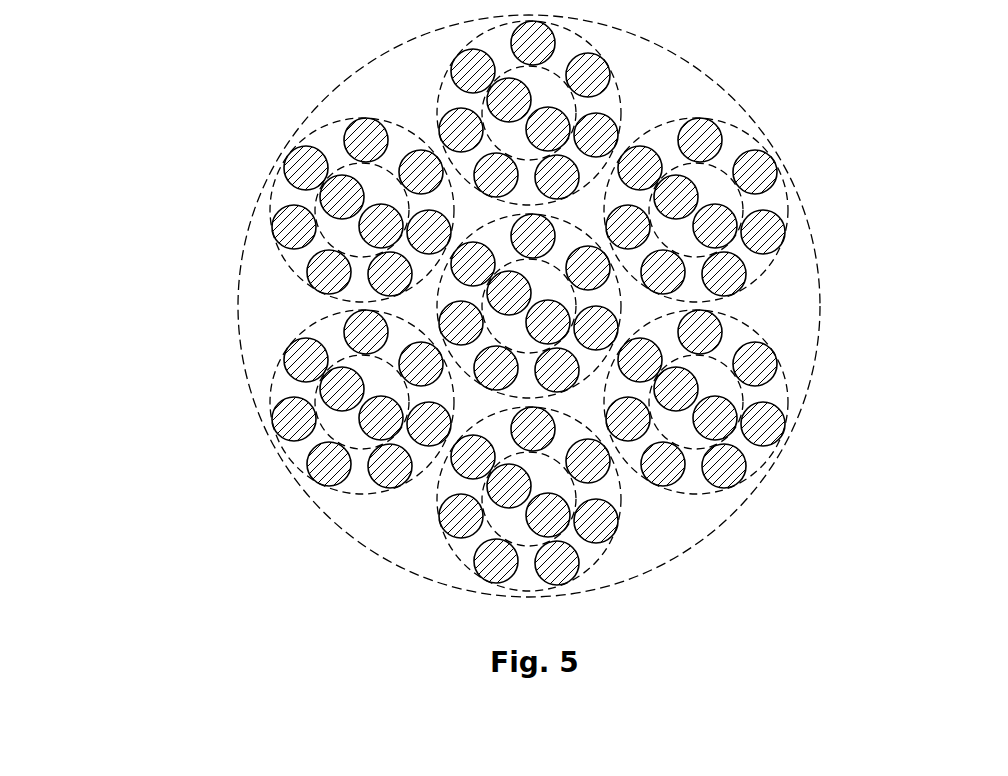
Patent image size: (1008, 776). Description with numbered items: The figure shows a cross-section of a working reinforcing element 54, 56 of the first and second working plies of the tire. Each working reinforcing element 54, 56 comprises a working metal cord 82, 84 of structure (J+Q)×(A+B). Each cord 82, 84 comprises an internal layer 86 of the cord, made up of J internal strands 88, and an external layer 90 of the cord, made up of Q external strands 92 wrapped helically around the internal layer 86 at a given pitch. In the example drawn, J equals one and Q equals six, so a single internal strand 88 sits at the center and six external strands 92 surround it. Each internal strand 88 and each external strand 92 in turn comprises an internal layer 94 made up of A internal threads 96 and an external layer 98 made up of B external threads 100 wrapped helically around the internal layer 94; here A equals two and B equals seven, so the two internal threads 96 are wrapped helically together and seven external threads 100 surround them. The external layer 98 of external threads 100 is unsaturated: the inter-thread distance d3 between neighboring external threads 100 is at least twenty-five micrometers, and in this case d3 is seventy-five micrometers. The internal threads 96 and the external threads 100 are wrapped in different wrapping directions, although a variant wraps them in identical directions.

The working reinforcing element 54 is at (426, 306).
The working reinforcing element 56 is at (200, 280).
The working metal cord 82 is at (286, 424).
The working metal cord 84 is at (286, 424).
The internal layer of the cord 86 is at (389, 232).
The internal strand 88 is at (488, 221).
The external layer of the cord 90 is at (280, 337).
The external strand 92 is at (292, 466).
The internal layer of the strand 94 is at (710, 194).
The internal thread 96 is at (735, 213).
The external layer of the strand 98 is at (768, 391).
The external thread 100 is at (775, 435).
The inter-thread distance d3 is at (200, 168).